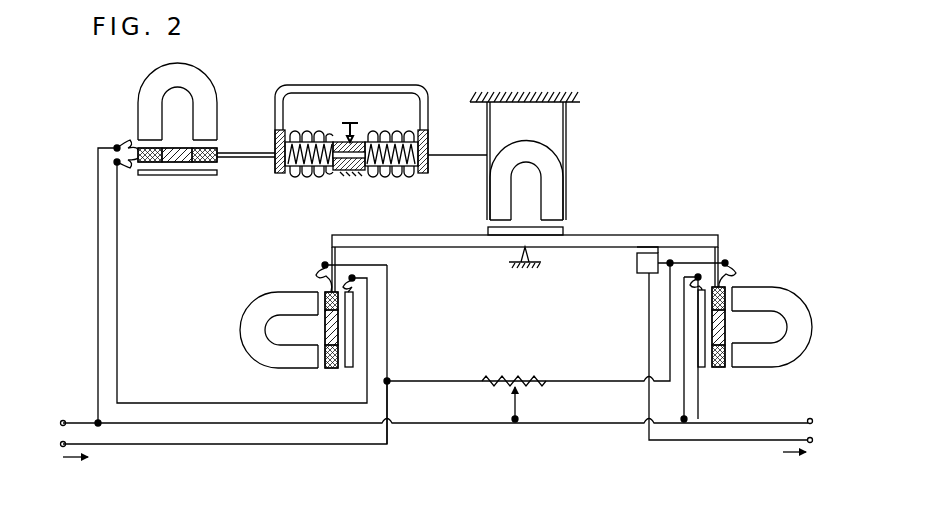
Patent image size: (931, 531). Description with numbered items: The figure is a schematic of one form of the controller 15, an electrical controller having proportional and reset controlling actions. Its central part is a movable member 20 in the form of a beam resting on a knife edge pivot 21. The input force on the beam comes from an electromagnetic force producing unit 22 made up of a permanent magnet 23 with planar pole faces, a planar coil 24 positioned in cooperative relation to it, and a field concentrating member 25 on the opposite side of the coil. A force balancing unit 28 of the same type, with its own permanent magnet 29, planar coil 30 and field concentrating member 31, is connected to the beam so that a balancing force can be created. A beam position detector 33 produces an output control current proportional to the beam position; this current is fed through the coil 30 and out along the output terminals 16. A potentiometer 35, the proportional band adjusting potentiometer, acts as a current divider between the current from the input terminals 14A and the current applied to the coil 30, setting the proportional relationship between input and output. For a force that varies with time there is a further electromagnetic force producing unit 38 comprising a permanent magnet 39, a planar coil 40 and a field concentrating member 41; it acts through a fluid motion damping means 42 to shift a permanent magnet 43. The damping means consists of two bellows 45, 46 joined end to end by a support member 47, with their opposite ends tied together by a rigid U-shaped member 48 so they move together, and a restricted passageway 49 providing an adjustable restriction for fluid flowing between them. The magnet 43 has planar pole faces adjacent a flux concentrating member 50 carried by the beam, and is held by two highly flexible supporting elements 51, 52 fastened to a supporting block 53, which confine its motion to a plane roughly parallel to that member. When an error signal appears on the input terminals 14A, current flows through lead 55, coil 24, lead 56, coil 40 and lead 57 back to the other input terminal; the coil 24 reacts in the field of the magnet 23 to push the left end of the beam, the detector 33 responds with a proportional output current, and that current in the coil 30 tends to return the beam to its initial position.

The controller 15 is at (544, 498).
The input terminals 14A is at (80, 421).
The output terminals 16 is at (798, 420).
The movable member 20 is at (400, 240).
The knife edge pivot 21 is at (535, 259).
The electromagnetic force producing unit 22 is at (275, 313).
The permanent magnet 23 is at (254, 311).
The planar coil 24 is at (328, 369).
The field concentrating member 25 is at (350, 368).
The force balancing unit 28 is at (760, 316).
The permanent magnet 29 is at (795, 306).
The planar coil 30 is at (718, 368).
The field concentrating member 31 is at (702, 368).
The beam position detector 33 is at (630, 259).
The potentiometer 35 is at (511, 370).
The electromagnetic force producing unit 38 is at (172, 129).
The permanent magnet 39 is at (154, 80).
The planar coil 40 is at (218, 160).
The field concentrating member 41 is at (190, 176).
The fluid motion damping means 42 is at (377, 121).
The permanent magnet 43 is at (528, 150).
The bellows 45 is at (319, 138).
The bellows 46 is at (401, 136).
The support member 47 is at (342, 171).
The rigid U-shaped member 48 is at (359, 90).
The restricted passageway 49 is at (351, 172).
The flux concentrating member 50 is at (487, 230).
The supporting element 51 is at (567, 121).
The supporting element 52 is at (486, 121).
The supporting block 53 is at (522, 94).
The lead 55 is at (250, 444).
The lead 56 is at (192, 403).
The lead 57 is at (98, 292).